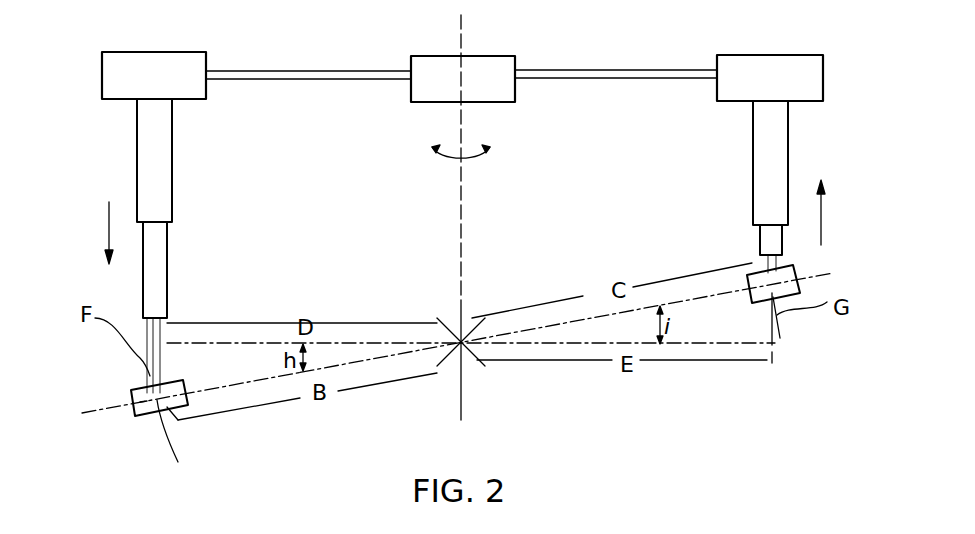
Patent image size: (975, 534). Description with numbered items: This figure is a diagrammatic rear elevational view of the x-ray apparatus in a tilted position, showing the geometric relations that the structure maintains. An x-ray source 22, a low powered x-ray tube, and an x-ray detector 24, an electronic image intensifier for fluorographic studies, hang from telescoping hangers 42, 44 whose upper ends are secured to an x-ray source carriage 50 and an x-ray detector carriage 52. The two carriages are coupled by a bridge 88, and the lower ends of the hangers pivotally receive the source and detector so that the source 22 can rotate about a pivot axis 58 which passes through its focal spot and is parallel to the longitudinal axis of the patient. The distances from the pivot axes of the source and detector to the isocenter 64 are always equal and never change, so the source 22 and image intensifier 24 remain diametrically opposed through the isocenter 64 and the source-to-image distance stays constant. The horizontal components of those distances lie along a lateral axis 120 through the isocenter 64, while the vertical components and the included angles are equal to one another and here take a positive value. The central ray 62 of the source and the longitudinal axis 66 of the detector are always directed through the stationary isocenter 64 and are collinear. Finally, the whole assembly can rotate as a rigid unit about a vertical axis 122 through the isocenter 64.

The x-ray source 22 is at (131, 393).
The x-ray detector 24 is at (793, 272).
The telescoping hanger 42 is at (145, 162).
The telescoping hanger 44 is at (768, 140).
The x-ray source carriage 50 is at (167, 86).
The x-ray detector carriage 52 is at (781, 88).
The pivot axis 58 is at (160, 405).
The central ray 62 is at (215, 388).
The isocenter 64 is at (457, 360).
The longitudinal axis 66 is at (567, 323).
The bridge 88 is at (505, 58).
The lateral axis 120 is at (350, 343).
The vertical axis 122 is at (462, 219).